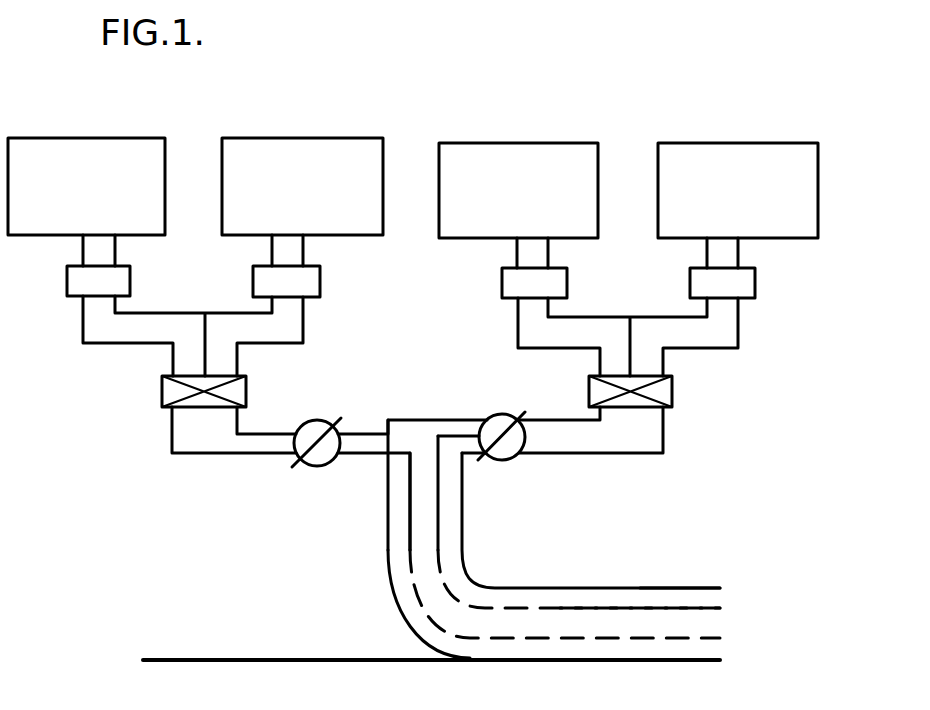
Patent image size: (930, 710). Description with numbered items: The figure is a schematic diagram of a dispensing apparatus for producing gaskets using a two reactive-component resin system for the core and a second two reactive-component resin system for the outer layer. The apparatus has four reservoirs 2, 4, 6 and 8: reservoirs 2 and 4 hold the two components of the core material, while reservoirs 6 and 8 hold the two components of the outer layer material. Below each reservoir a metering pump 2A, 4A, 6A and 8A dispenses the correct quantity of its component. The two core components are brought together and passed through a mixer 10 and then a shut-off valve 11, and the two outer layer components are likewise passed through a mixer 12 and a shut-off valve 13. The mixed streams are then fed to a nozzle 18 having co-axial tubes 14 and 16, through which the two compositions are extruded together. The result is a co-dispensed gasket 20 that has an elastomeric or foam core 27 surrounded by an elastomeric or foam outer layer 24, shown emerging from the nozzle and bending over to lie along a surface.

The reservoir 2 is at (72, 204).
The reservoir 4 is at (290, 204).
The reservoir 6 is at (506, 207).
The reservoir 8 is at (725, 207).
The metering pump 2A is at (128, 283).
The metering pump 4A is at (313, 281).
The metering pump 6A is at (558, 289).
The metering pump 8A is at (747, 286).
The mixer 10 is at (163, 389).
The shut-off valve 11 is at (313, 421).
The mixer 12 is at (673, 400).
The shut-off valve 13 is at (498, 416).
The co-axial tube 14 is at (438, 503).
The co-axial tube 16 is at (462, 518).
The nozzle 18 is at (380, 498).
The co-dispensed gasket 20 is at (390, 610).
The outer layer 24 is at (675, 595).
The core 27 is at (592, 623).